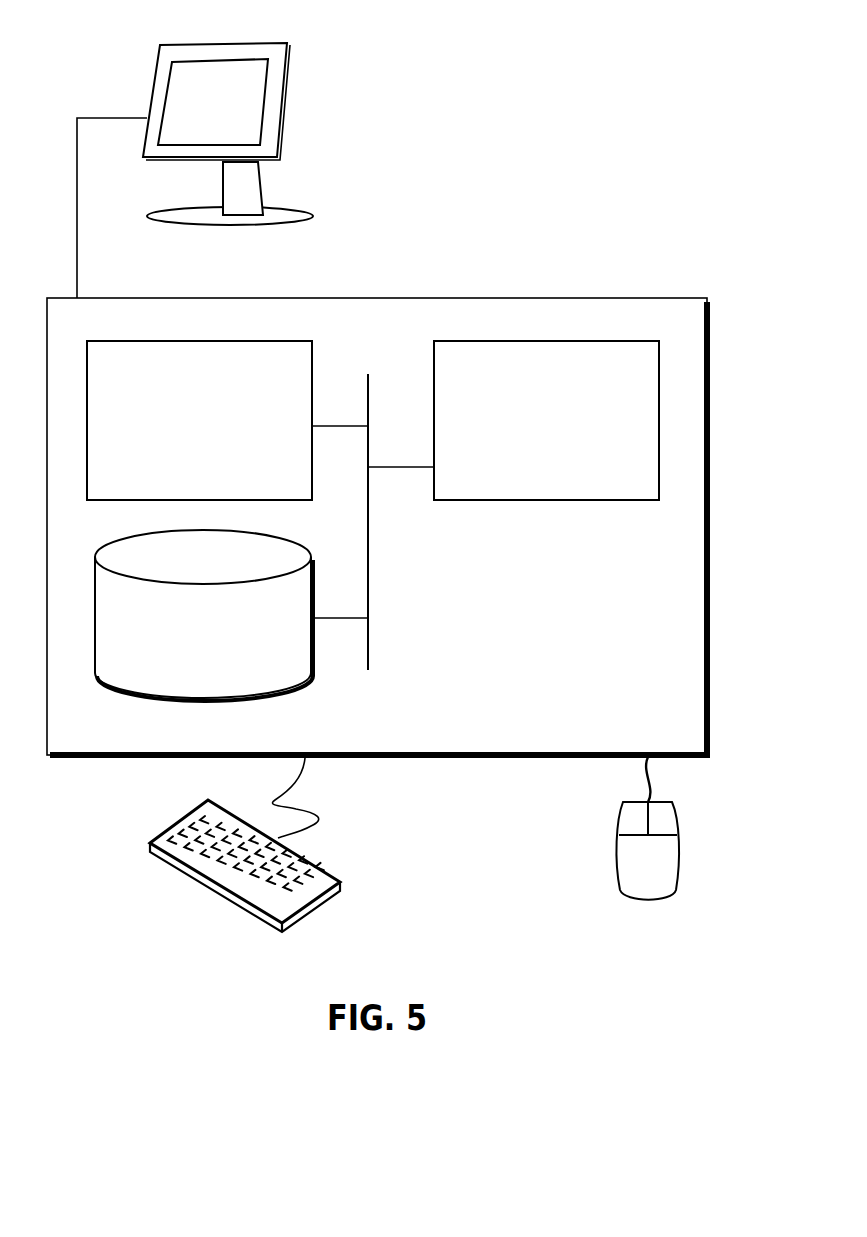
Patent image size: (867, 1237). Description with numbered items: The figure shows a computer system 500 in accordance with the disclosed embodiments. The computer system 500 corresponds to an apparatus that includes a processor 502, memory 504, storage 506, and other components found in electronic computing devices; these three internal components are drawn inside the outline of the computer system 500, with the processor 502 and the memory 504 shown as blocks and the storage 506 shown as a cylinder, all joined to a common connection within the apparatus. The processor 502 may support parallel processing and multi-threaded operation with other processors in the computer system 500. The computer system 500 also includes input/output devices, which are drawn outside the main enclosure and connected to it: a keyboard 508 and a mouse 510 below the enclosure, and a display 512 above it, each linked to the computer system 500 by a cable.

The computer system 500 is at (423, 277).
The processor 502 is at (529, 432).
The memory 504 is at (178, 432).
The storage 506 is at (185, 645).
The keyboard 508 is at (170, 865).
The mouse 510 is at (626, 877).
The display 512 is at (195, 170).